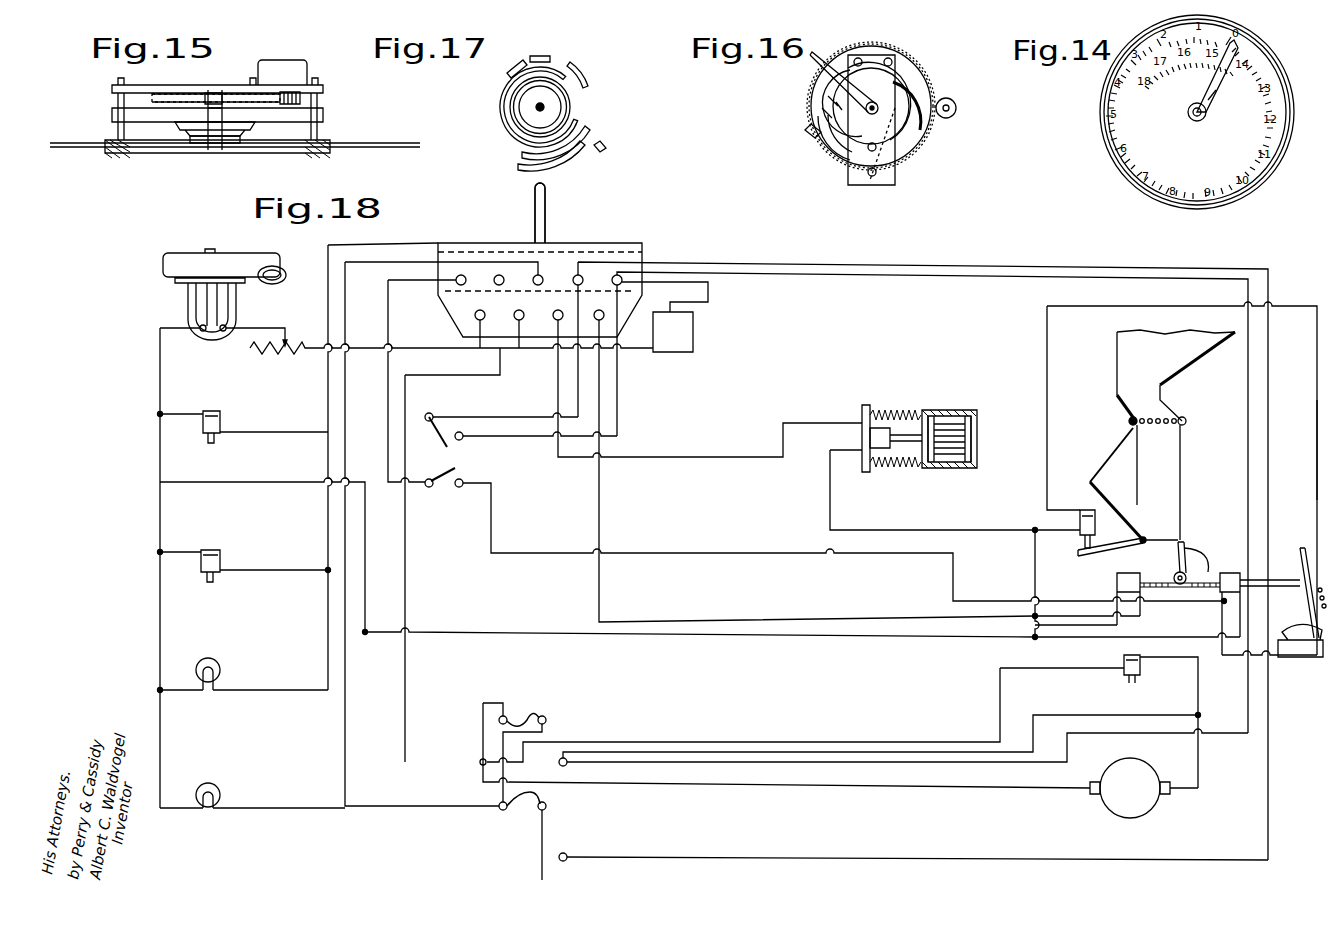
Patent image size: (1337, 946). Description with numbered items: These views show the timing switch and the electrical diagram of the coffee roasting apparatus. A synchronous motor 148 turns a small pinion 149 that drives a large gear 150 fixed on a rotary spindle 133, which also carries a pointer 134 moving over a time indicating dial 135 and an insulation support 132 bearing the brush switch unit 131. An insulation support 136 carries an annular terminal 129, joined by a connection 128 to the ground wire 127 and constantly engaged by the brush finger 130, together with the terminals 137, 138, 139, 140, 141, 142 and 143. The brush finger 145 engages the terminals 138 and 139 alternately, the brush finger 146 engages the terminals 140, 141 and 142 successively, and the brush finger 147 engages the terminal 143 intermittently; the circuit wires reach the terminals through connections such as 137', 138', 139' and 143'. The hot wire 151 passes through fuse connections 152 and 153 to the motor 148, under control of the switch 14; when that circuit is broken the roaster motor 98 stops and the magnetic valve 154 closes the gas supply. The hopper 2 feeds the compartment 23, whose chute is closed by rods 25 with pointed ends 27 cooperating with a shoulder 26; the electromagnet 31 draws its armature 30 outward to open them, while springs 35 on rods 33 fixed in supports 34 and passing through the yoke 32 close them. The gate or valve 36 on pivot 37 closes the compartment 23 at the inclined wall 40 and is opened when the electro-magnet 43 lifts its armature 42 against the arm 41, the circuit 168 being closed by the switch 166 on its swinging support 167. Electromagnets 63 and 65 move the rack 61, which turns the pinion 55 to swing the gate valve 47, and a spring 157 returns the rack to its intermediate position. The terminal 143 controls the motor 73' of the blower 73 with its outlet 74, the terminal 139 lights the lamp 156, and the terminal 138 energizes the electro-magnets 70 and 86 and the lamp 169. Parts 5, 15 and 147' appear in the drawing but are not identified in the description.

In FIG. 15, the synchronous motor 148 is at (280, 62).
In FIG. 18, the synchronous motor 148 is at (672, 328).
In FIG. 15, the rotary spindle 133 is at (212, 104).
In FIG. 17, the rotary spindle 133 is at (540, 107).
In FIG. 16, the rotary spindle 133 is at (876, 117).
In FIG. 14, the rotary spindle 133 is at (1194, 120).
In FIG. 15, the large gear 150 is at (222, 96).
In FIG. 16, the large gear 150 is at (905, 55).
In FIG. 15, the small pinion 149 is at (300, 98).
In FIG. 16, the small pinion 149 is at (953, 115).
In FIG. 15, the insulation support 136 is at (112, 115).
In FIG. 15, the arcuate terminal 137 is at (235, 166).
In FIG. 15, the switch unit 131 is at (200, 139).
In FIG. 16, the switch unit 131 is at (915, 140).
In FIG. 15, the insulation support 132 is at (236, 134).
In FIG. 16, the insulation support 132 is at (893, 175).
In FIG. 17, the terminal 141 is at (550, 58).
In FIG. 18, the terminal 141 is at (602, 319).
In FIG. 17, the terminal member 140 is at (507, 73).
In FIG. 18, the terminal member 140 is at (456, 280).
In FIG. 17, the terminal 142 is at (588, 84).
In FIG. 18, the terminal 142 is at (556, 319).
In FIG. 17, the annular terminal 129 is at (574, 104).
In FIG. 17, the pivot 37 is at (512, 136).
In FIG. 18, the pivot 37 is at (1170, 548).
In FIG. 17, the terminal 143 is at (542, 146).
In FIG. 17, the terminal 138 is at (615, 158).
In FIG. 17, the terminal 139 is at (545, 192).
In FIG. 18, the terminal 139 is at (525, 211).
In FIG. 16, the brush finger 130 is at (835, 88).
In FIG. 16, the brush finger 146 is at (920, 85).
In FIG. 16, the brush finger 147 is at (807, 101).
In FIG. 16, the contact 147' is at (801, 116).
In FIG. 16, the brush finger 145 is at (808, 134).
In FIG. 16, the pointer 134 is at (822, 52).
In FIG. 14, the pointer 134 is at (1210, 98).
In FIG. 14, the time indicating dial 135 is at (1125, 165).
In FIG. 18, the blower 73 is at (221, 254).
In FIG. 18, the outlet 74 is at (286, 272).
In FIG. 18, the blower motor 73' is at (229, 311).
In FIG. 18, the connection 139' is at (494, 257).
In FIG. 18, the connection 138' is at (524, 272).
In FIG. 18, the connection 137' is at (928, 480).
In FIG. 18, the connection 128 is at (578, 275).
In FIG. 18, the connection 143' is at (458, 329).
In FIG. 18, the switch 14 is at (438, 430).
In FIG. 18, the switch 15 is at (437, 487).
In FIG. 18, the electro-magnet 86 is at (215, 422).
In FIG. 18, the electro-magnet 70 is at (214, 560).
In FIG. 18, the lamp 169 is at (218, 670).
In FIG. 18, the lamp 156 is at (218, 795).
In FIG. 18, the hot wire 151 is at (405, 605).
In FIG. 18, the fuse connection 153 is at (522, 717).
In FIG. 18, the fuse connection 152 is at (512, 810).
In FIG. 18, the spring 157 is at (540, 854).
In FIG. 18, the ground wire 127 is at (695, 857).
In FIG. 18, the springs 35 is at (908, 398).
In FIG. 18, the rods 33 is at (1205, 415).
In FIG. 18, the supports 34 is at (960, 410).
In FIG. 18, the electromagnet 31 is at (870, 433).
In FIG. 18, the yoke 32 is at (862, 445).
In FIG. 18, the rods 25 is at (965, 440).
In FIG. 18, the armature 30 is at (905, 441).
In FIG. 18, the hopper 2 is at (1117, 365).
In FIG. 18, the arm 5 is at (1190, 363).
In FIG. 18, the compartment 23 is at (1110, 465).
In FIG. 18, the shoulder 26 is at (1150, 424).
In FIG. 18, the pointed ends 27 is at (1137, 472).
In FIG. 18, the circuit 168 is at (1317, 490).
In FIG. 18, the electro-magnet 43 is at (1080, 522).
In FIG. 18, the armature 42 is at (1076, 542).
In FIG. 18, the arm 41 is at (1105, 549).
In FIG. 18, the inclined wall 40 is at (1125, 522).
In FIG. 18, the gate or valve 36 is at (1160, 540).
In FIG. 18, the gate valve 47 is at (1186, 555).
In FIG. 18, the electromagnet 65 is at (1208, 560).
In FIG. 18, the pinion 55 is at (1232, 573).
In FIG. 18, the electromagnet 63 is at (1117, 585).
In FIG. 18, the rack 61 is at (1170, 588).
In FIG. 18, the swinging support 167 is at (1305, 585).
In FIG. 18, the switch 166 is at (1290, 657).
In FIG. 18, the magnetic valve 154 is at (1124, 662).
In FIG. 18, the motor 98 is at (1135, 818).